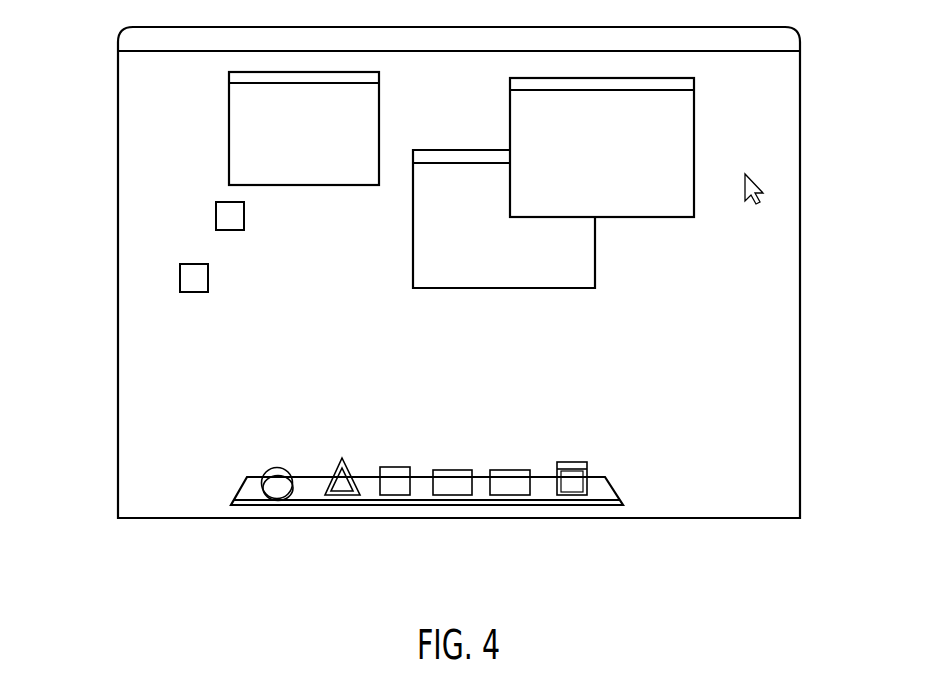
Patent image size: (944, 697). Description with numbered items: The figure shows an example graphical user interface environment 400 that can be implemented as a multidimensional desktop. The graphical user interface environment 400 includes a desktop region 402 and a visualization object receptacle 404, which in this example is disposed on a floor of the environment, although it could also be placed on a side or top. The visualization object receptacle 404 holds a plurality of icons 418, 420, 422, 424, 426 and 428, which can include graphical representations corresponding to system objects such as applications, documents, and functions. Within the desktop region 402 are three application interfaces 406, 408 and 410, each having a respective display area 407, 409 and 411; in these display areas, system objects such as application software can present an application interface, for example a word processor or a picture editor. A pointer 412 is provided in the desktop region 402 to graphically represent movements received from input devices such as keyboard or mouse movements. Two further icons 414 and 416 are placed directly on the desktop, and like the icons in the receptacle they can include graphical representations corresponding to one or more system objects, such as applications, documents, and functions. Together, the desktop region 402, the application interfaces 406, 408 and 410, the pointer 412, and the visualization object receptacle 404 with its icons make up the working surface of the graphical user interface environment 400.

The graphical user interface environment 400 is at (797, 113).
The desktop region 402 is at (140, 193).
The visualization object receptacle 404 is at (602, 490).
The application interface 406 is at (229, 128).
The display area 407 is at (358, 130).
The application interface 408 is at (510, 112).
The display area 409 is at (675, 149).
The application interface 410 is at (413, 197).
The display area 411 is at (573, 270).
The pointer 412 is at (752, 201).
The icon 414 is at (228, 230).
The icon 416 is at (195, 292).
The icon 418 is at (278, 497).
The icon 420 is at (343, 489).
The icon 422 is at (395, 495).
The icon 424 is at (452, 495).
The icon 426 is at (510, 495).
The icon 428 is at (576, 495).